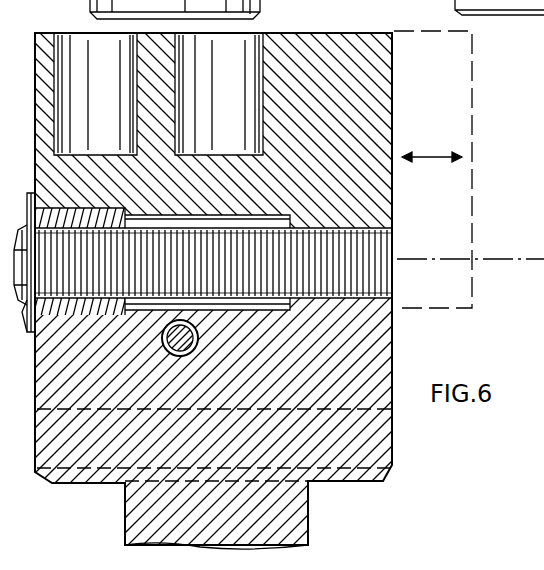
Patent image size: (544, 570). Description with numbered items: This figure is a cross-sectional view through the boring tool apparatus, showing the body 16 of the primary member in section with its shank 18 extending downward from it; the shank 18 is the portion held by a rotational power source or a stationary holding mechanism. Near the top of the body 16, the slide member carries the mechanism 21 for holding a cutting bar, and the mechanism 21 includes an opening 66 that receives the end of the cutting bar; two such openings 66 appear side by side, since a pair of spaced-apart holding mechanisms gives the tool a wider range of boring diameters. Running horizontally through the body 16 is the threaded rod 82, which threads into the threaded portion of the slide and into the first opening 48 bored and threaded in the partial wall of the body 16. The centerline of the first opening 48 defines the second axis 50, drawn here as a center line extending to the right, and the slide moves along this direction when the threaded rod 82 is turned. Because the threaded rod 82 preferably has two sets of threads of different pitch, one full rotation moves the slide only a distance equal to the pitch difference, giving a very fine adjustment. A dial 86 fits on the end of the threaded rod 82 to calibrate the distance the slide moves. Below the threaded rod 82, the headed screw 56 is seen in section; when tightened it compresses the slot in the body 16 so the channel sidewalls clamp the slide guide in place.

The body 16 is at (370, 362).
The shank 18 is at (298, 524).
The mechanism for holding a cutting bar 21 is at (336, 34).
The first opening 48 is at (30, 200).
The second axis 50 is at (508, 259).
The headed screw 56 is at (190, 348).
The opening 66 is at (80, 60).
The threaded rod 82 is at (78, 268).
The dial 86 is at (30, 328).